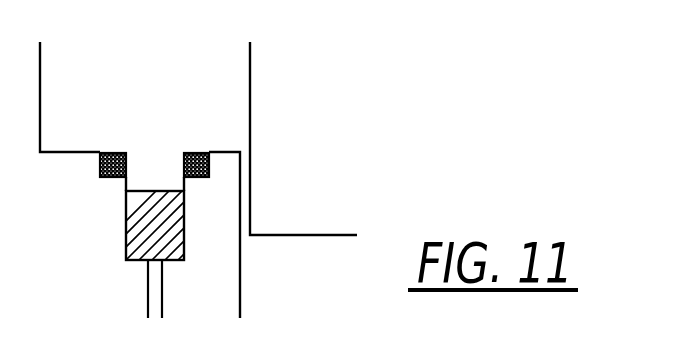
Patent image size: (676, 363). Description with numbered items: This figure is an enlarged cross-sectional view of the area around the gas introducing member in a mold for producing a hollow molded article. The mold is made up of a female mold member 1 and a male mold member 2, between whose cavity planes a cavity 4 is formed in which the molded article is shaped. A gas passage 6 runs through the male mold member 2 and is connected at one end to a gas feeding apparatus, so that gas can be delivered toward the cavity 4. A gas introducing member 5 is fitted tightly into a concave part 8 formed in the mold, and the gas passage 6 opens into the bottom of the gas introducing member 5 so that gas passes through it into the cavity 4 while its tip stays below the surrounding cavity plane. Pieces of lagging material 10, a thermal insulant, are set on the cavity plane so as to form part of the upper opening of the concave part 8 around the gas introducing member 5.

The female mold member 1 is at (368, 146).
The male mold member 2 is at (82, 251).
The cavity 4 is at (158, 88).
The gas introducing member 5 is at (173, 218).
The gas passage 6 is at (163, 293).
The concave part 8 is at (158, 170).
The lagging material 10 is at (207, 163).